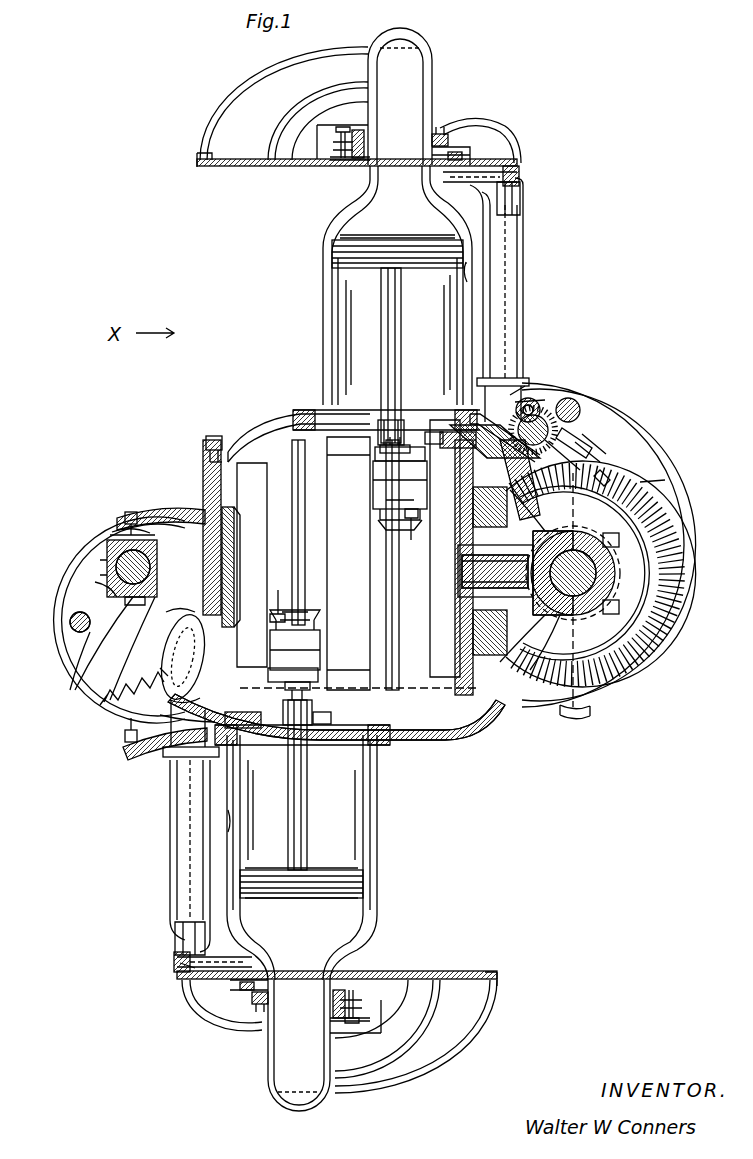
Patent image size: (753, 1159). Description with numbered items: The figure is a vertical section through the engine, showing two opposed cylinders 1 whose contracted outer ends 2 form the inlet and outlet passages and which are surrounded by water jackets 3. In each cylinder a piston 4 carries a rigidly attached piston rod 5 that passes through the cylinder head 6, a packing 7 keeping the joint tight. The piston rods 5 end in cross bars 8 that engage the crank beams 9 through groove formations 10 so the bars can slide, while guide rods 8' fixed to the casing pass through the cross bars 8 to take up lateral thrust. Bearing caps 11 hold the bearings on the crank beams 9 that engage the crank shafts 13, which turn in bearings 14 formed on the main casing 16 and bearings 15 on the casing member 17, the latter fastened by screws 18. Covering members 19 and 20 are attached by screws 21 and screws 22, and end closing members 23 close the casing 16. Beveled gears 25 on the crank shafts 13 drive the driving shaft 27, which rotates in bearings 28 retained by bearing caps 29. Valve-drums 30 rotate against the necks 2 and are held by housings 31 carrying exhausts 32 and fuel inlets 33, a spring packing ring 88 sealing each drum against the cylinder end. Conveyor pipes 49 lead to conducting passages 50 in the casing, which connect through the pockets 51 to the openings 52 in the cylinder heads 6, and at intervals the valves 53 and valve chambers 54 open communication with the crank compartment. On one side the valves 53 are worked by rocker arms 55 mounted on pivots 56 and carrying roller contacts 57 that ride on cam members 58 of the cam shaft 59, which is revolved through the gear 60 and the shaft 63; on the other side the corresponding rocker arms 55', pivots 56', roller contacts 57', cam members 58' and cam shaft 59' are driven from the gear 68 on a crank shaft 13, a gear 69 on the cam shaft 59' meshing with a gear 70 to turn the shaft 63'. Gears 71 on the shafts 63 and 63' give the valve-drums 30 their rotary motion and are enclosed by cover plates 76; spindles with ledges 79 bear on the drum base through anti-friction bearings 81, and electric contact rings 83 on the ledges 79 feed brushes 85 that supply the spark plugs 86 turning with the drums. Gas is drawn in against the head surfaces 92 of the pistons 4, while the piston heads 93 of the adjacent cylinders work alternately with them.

The cylinders 1 is at (326, 297).
The contracted outer ends 2 is at (323, 207).
The water jackets 3 is at (228, 810).
The pistons 4 is at (332, 252).
The piston rods 5 is at (390, 362).
The cylinder heads 6 is at (432, 430).
The packing 7 is at (388, 420).
The cross bars 8 is at (346, 564).
The guide rods 8' is at (346, 565).
The crank beams 9 is at (390, 484).
The groove formations 10 is at (380, 452).
The bearing caps 11 is at (412, 532).
The crank shafts 13 is at (178, 548).
The bearings 14 is at (573, 607).
The bearings 15 is at (165, 613).
The main casing 16 is at (285, 416).
The casing member 17 is at (172, 510).
The screws 18 is at (217, 436).
The covering member 19 is at (63, 667).
The covering member 20 is at (680, 640).
The screws 21 is at (130, 514).
The screws 22 is at (585, 708).
The end closing members 23 is at (445, 714).
The beveled gears 25 is at (492, 690).
The driving shaft 27 is at (596, 570).
The bearings 28 is at (612, 587).
The bearing caps 29 is at (615, 553).
The valve-drums 30 is at (470, 163).
The housings 31 is at (492, 141).
The exhausts 32 is at (406, 40).
The fuel inlets 33 is at (262, 83).
The conveyor pipes 49 is at (521, 206).
The conducting passages 50 is at (508, 378).
The pockets 51 is at (495, 442).
The openings 52 is at (452, 440).
The valves 53 is at (170, 722).
The valve chambers 54 is at (105, 660).
The rocker arms 55 is at (608, 427).
The pivot 56 is at (562, 411).
The roller contacts 57 is at (544, 385).
The cam members 58 is at (600, 399).
The cam shaft 59 is at (558, 367).
The gear 60 is at (584, 440).
The shaft 63 is at (526, 198).
The gear 68 is at (228, 533).
The gear 69 is at (132, 605).
The gear 70 is at (213, 462).
The gears 71 is at (180, 964).
The cover plates 76 is at (520, 176).
The ledges 79 is at (456, 132).
The anti-friction bearings 81 is at (187, 1037).
The electric contact rings 83 is at (439, 133).
The brushes 85 is at (340, 128).
The spark plugs 86 is at (337, 140).
The spring packing ring 88 is at (337, 193).
The head surfaces 92 is at (380, 247).
The piston heads 93 is at (290, 898).
The roller contacts 57' is at (99, 566).
The cam shaft 59' is at (106, 521).
The cam members 58' is at (61, 574).
The rocker arms 55' is at (76, 597).
The pivot 56' is at (51, 626).
The shaft 63' is at (161, 943).